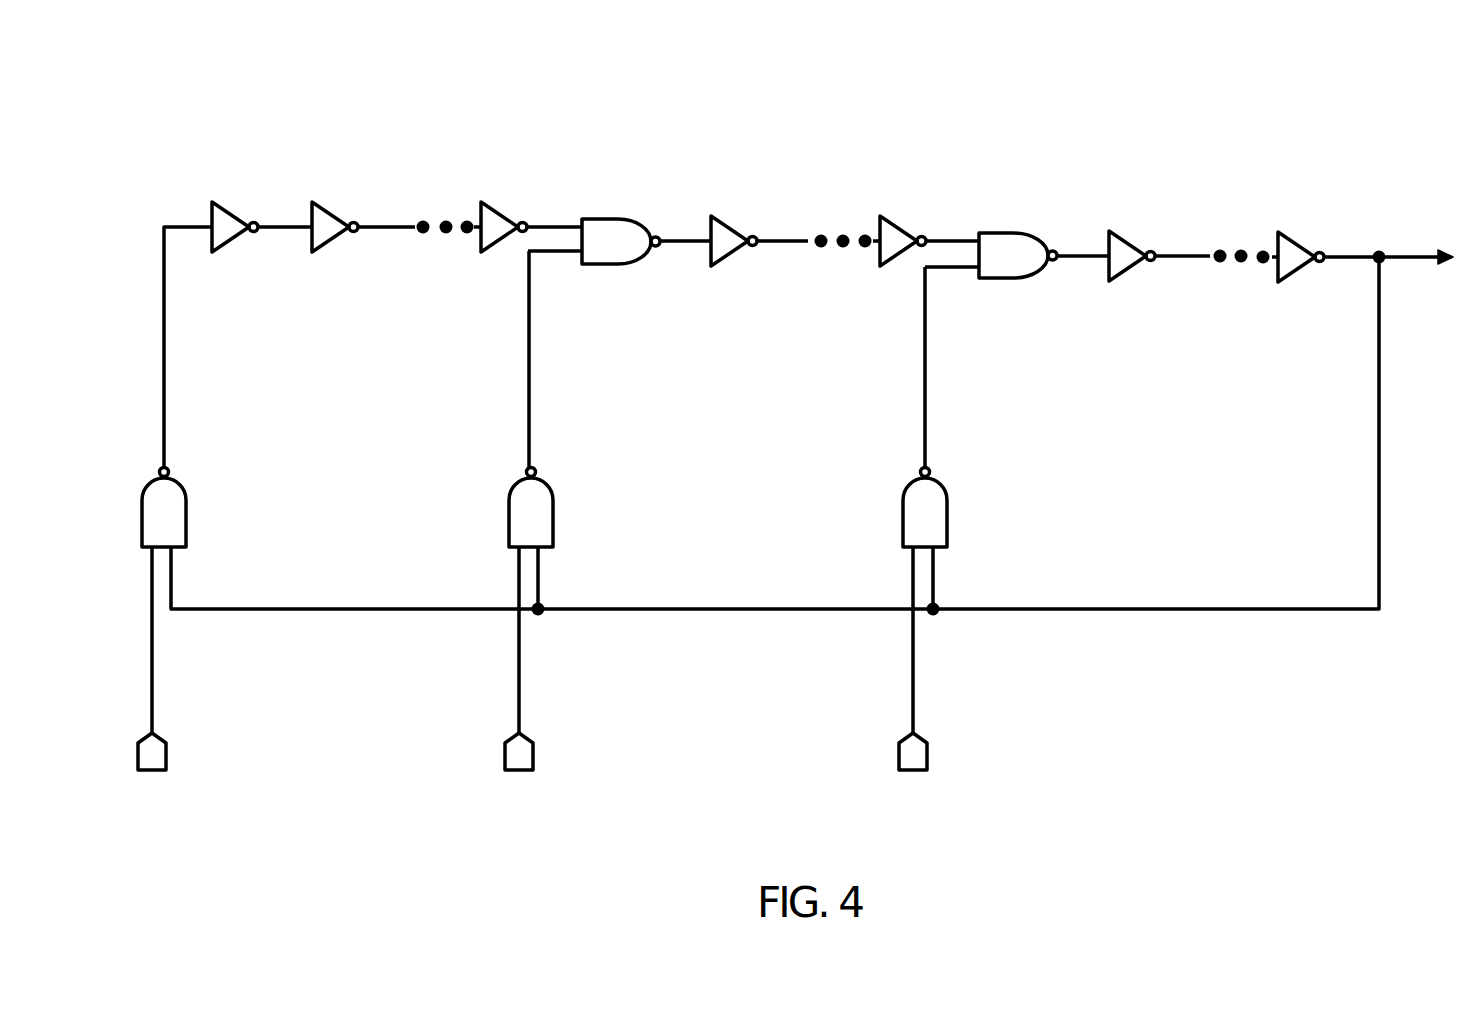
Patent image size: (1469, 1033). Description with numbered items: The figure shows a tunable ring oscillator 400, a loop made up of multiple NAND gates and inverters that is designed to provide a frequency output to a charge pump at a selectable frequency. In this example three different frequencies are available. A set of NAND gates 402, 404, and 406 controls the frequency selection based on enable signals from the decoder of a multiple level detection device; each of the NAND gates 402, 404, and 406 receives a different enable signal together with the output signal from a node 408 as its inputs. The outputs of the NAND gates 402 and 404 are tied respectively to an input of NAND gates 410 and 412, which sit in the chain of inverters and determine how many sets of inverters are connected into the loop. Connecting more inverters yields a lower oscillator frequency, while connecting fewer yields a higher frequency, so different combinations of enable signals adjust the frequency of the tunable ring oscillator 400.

The tunable ring oscillator 400 is at (324, 122).
The NAND gate 402 is at (948, 520).
The NAND gate 404 is at (552, 520).
The NAND gate 406 is at (186, 520).
The node 408 is at (1377, 252).
The NAND gate 410 is at (1030, 278).
The NAND gate 412 is at (621, 264).